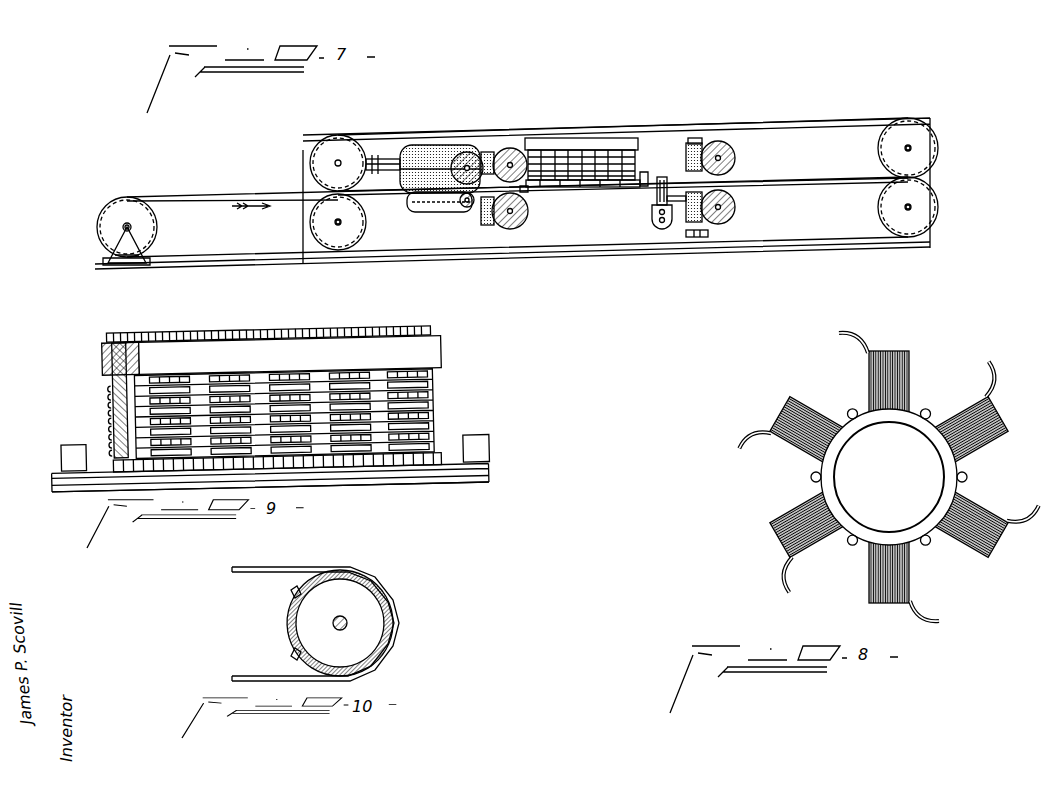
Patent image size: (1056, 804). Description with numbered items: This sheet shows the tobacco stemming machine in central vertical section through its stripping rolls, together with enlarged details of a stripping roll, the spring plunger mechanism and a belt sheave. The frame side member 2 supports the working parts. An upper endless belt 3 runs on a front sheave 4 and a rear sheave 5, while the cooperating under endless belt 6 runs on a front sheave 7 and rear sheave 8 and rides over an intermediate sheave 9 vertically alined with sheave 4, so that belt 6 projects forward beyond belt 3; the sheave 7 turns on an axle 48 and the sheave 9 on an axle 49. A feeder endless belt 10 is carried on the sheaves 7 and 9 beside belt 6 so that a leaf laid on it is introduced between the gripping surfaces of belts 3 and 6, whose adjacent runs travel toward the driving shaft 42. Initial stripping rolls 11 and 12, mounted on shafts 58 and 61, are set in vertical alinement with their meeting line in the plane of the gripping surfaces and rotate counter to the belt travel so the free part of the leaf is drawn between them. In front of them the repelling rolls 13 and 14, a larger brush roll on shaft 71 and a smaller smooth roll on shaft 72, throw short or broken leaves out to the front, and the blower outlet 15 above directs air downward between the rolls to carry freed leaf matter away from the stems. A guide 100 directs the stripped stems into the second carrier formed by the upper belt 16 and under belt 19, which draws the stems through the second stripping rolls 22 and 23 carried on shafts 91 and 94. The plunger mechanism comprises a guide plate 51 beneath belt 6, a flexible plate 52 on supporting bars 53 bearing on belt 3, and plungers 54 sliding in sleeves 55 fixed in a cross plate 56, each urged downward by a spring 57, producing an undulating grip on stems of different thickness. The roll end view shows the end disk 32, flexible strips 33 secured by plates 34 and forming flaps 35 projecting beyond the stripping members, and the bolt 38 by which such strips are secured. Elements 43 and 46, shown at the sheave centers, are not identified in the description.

In FIG. 7, the side member 2 is at (623, 156).
In FIG. 7, the upper endless belt 3 is at (802, 128).
In FIG. 9, the upper endless belt 3 is at (489, 470).
In FIG. 7, the front sheave 4 is at (334, 145).
In FIG. 7, the rear sheave 5 is at (926, 152).
In FIG. 7, the under endless belt 6 is at (812, 249).
In FIG. 9, the under endless belt 6 is at (489, 484).
In FIG. 7, the front sheave 7 is at (160, 233).
In FIG. 7, the rear sheave 8 is at (890, 208).
In FIG. 7, the intermediate sheave 9 is at (368, 227).
In FIG. 7, the feeder endless belt 10 is at (190, 197).
In FIG. 7, the initial stripping roll 11 is at (510, 162).
In FIG. 7, the initial stripping roll 12 is at (530, 214).
In FIG. 7, the repelling roll 13 is at (439, 147).
In FIG. 7, the repelling roll 14 is at (440, 209).
In FIG. 7, the blower outlet 15 is at (487, 152).
In FIG. 7, the upper endless belt 16 is at (697, 139).
In FIG. 7, the under belt member 19 is at (697, 238).
In FIG. 7, the second stripping roll 22 is at (736, 208).
In FIG. 7, the second stripping roll 23 is at (736, 171).
In FIG. 8, the disk 32 is at (889, 489).
In FIG. 8, the strip of flexible material 33 is at (853, 396).
In FIG. 8, the plate 34 is at (832, 417).
In FIG. 8, the flexible flap 35 is at (836, 333).
In FIG. 8, the bolt 38 is at (806, 482).
In FIG. 7, the driving shaft 42 is at (912, 207).
In FIG. 7, the shaft 43 is at (336, 163).
In FIG. 7, the shaft 46 is at (902, 150).
In FIG. 7, the axle 48 is at (125, 225).
In FIG. 7, the axle 49 is at (336, 223).
In FIG. 9, the guide plate 51 is at (440, 490).
In FIG. 7, the flexible plate 52 is at (604, 188).
In FIG. 9, the flexible plate 52 is at (442, 465).
In FIG. 7, the supporting bar 53 is at (644, 172).
In FIG. 9, the supporting bar 53 is at (60, 452).
In FIG. 7, the plunger 54 is at (596, 188).
In FIG. 9, the plunger 54 is at (103, 366).
In FIG. 9, the sleeve 55 is at (112, 398).
In FIG. 7, the cross plate 56 is at (592, 146).
In FIG. 9, the cross plate 56 is at (441, 358).
In FIG. 9, the spring 57 is at (114, 416).
In FIG. 7, the shaft 58 is at (394, 166).
In FIG. 7, the shaft 61 is at (524, 201).
In FIG. 7, the shaft 71 is at (467, 165).
In FIG. 7, the shaft 72 is at (467, 207).
In FIG. 7, the shaft 91 is at (727, 217).
In FIG. 7, the shaft 94 is at (720, 156).
In FIG. 7, the guide 100 is at (660, 198).